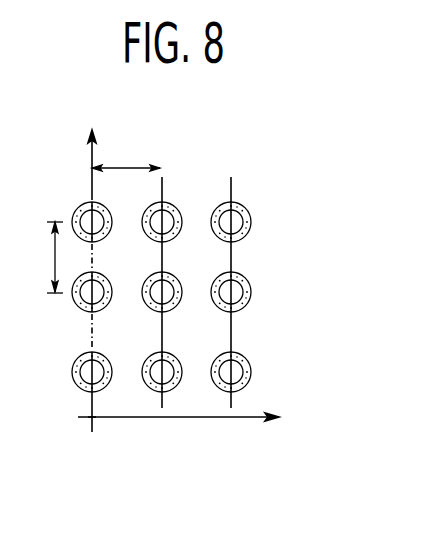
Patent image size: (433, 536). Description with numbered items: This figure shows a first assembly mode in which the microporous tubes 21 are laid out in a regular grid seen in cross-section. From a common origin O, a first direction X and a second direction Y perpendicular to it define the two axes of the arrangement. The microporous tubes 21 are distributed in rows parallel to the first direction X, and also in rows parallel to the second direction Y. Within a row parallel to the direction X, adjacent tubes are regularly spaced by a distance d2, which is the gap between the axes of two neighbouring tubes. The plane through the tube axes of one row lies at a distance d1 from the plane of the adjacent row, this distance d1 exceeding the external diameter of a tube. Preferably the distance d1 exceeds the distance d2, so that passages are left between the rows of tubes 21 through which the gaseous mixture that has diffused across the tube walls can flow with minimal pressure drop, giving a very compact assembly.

The microporous tube 21 is at (250, 216).
The distance between adjacent rows d1 is at (36, 257).
The distance between adjacent tubes d2 is at (126, 152).
The first direction OX X is at (184, 432).
The second direction OY Y is at (91, 268).
The origin of directions OX and OY O is at (80, 432).